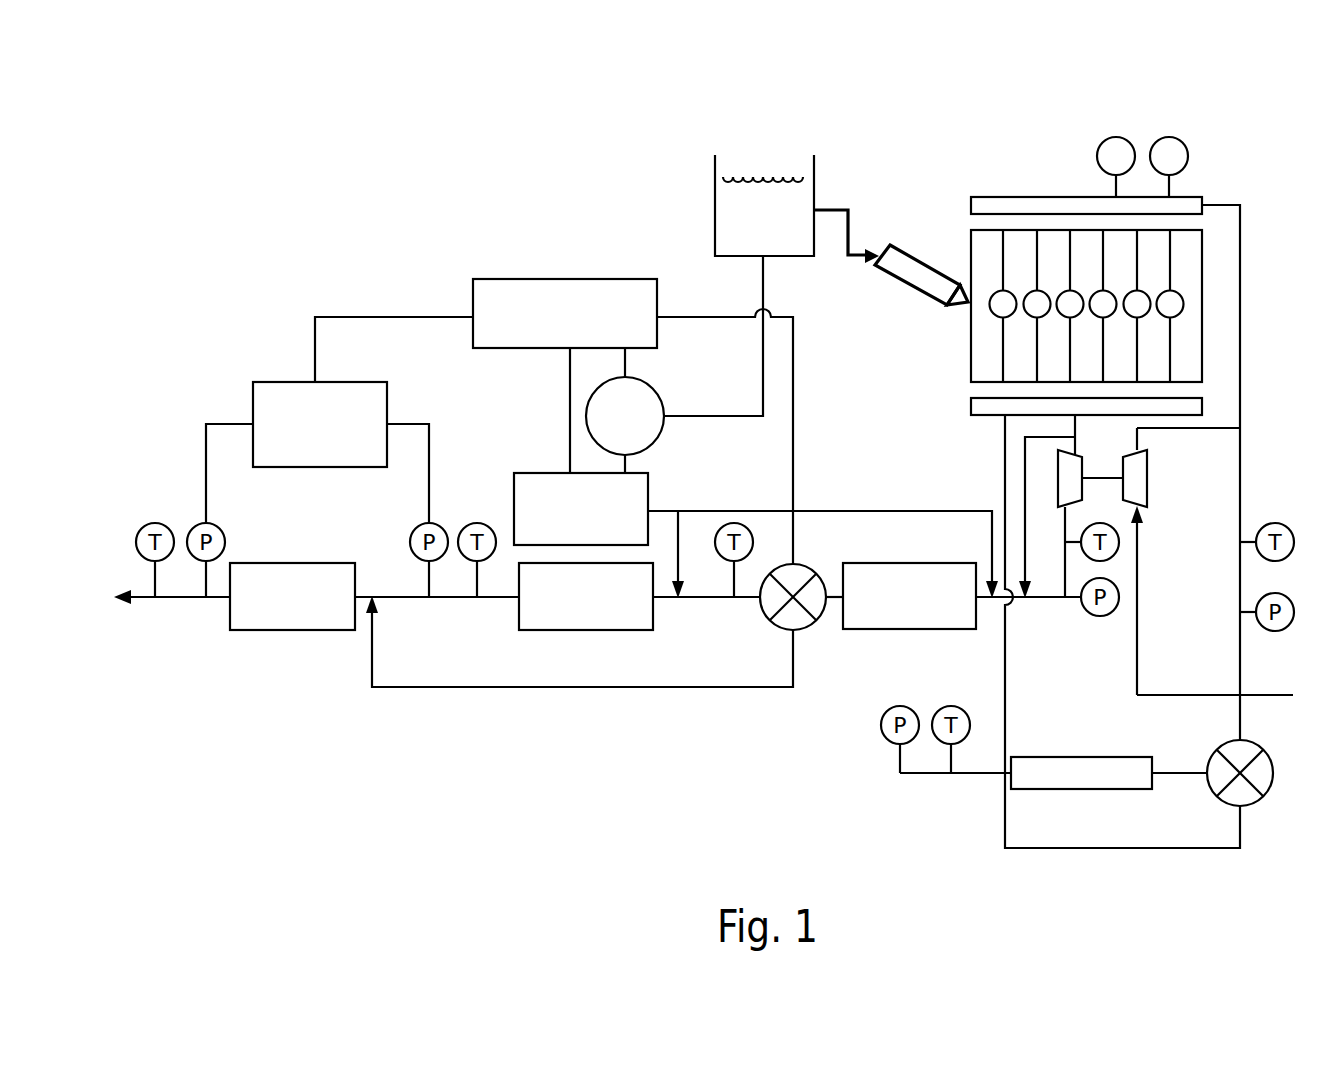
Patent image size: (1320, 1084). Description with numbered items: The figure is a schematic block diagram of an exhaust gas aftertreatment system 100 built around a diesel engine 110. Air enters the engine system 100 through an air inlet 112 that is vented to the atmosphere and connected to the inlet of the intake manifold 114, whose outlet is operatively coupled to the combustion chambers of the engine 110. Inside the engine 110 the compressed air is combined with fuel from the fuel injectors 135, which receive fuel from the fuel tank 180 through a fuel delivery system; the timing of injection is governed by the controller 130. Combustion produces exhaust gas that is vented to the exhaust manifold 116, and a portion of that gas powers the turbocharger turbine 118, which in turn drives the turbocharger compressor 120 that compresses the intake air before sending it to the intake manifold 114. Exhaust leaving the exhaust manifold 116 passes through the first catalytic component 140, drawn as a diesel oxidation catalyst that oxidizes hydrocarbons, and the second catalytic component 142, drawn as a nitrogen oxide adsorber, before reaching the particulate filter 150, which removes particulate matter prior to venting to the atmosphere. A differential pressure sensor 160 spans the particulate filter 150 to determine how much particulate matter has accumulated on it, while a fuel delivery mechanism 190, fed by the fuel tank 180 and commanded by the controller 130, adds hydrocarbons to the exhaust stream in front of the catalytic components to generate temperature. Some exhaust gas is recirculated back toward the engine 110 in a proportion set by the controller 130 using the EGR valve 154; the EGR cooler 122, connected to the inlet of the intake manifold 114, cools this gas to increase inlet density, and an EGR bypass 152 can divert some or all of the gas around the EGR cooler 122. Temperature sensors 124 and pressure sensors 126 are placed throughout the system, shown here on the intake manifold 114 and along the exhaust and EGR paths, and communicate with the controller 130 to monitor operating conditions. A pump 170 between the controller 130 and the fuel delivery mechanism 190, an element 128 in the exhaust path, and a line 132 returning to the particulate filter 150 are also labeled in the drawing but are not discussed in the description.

The exhaust gas aftertreatment system 100 is at (273, 161).
The diesel engine 110 is at (1184, 304).
The air inlet 112 is at (1284, 697).
The intake manifold 114 is at (1034, 197).
The exhaust manifold 116 is at (1108, 417).
The turbocharger turbine 118 is at (1060, 497).
The turbocharger compressor 120 is at (1147, 470).
The EGR cooler 122 is at (1076, 790).
The temperature sensors 124 is at (1104, 142).
The pressure sensors 126 is at (1188, 156).
The exhaust valve 128 is at (815, 622).
The controller 130 is at (583, 340).
The bypass line 132 is at (728, 688).
The fuel injectors 135 is at (887, 246).
The first catalytic component 140 is at (918, 630).
The second catalytic component 142 is at (589, 630).
The particulate filter 150 is at (297, 563).
The EGR bypass 152 is at (1163, 849).
The EGR valve 154 is at (1256, 797).
The differential pressure sensor 160 is at (290, 382).
The pump 170 is at (643, 442).
The fuel tank 180 is at (715, 212).
The fuel delivery mechanism 190 is at (534, 473).